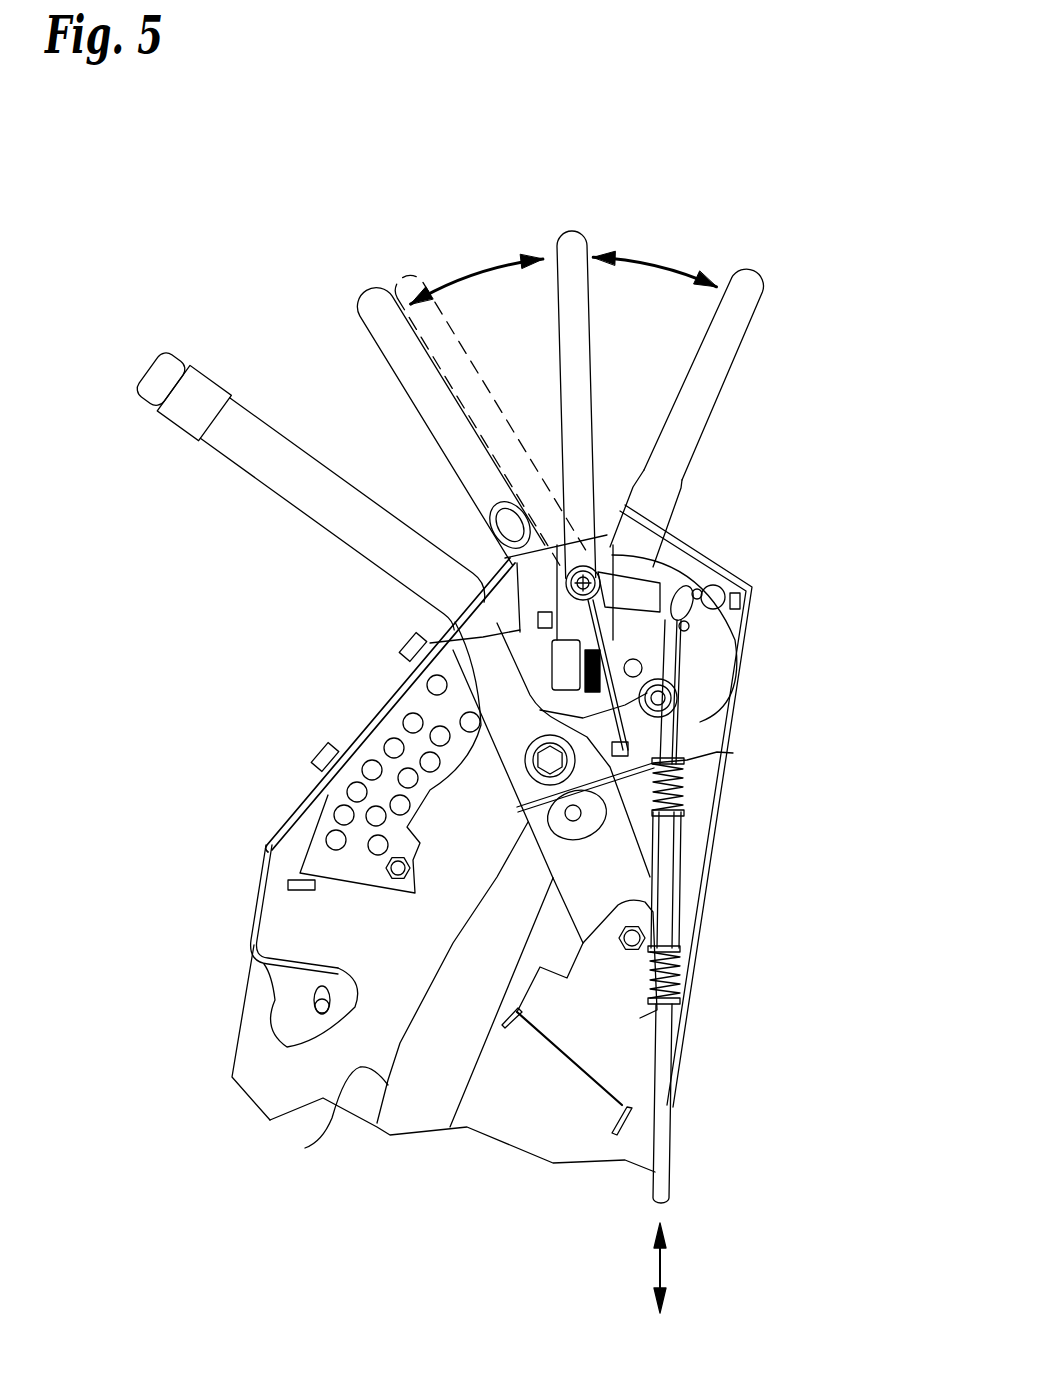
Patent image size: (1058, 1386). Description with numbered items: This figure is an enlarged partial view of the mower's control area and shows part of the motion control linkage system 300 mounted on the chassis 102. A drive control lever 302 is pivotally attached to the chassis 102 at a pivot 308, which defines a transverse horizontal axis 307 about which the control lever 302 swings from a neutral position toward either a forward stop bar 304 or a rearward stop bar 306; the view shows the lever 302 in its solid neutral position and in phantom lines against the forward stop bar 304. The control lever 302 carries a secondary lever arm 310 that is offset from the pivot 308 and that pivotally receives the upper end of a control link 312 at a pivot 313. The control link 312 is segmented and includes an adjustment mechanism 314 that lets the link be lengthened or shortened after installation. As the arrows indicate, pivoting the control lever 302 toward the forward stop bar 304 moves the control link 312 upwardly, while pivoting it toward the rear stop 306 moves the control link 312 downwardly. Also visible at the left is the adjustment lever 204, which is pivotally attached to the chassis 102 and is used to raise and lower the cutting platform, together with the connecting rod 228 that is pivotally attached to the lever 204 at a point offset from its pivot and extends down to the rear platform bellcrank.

The chassis 102 is at (288, 828).
The adjustment lever 204 is at (212, 377).
The connecting rod 228 is at (305, 1148).
The motion control linkage system 300 is at (760, 740).
The control lever 302 is at (580, 236).
The forward stop bar 304 is at (364, 306).
The rearward stop bar 306 is at (758, 272).
The transverse horizontal axis 307 is at (470, 640).
The pivot 308 is at (605, 545).
The secondary lever arm 310 is at (665, 585).
The control link 312 is at (673, 1150).
The pivot 313 is at (695, 598).
The adjustment mechanism 314 is at (683, 867).